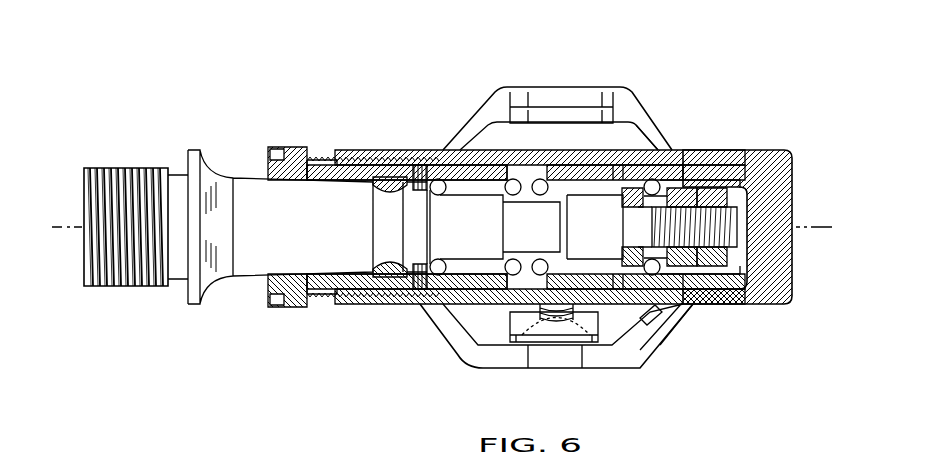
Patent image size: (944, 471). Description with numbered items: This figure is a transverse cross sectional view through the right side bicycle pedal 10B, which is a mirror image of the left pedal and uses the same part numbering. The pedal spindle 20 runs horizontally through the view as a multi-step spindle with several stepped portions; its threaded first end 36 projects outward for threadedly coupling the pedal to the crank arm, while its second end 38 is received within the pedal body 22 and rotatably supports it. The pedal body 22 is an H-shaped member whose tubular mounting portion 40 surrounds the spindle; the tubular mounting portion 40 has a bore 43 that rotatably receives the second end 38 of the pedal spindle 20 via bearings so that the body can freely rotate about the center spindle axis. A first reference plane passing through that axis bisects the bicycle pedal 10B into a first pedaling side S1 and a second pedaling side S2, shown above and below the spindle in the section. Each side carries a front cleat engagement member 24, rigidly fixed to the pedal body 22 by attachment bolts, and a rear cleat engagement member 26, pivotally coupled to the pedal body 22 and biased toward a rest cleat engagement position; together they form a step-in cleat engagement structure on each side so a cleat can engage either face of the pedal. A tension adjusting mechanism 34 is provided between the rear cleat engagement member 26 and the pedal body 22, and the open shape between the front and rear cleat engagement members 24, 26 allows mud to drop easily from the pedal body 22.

The right side bicycle pedal 10B is at (688, 88).
The pedal spindle 20 is at (246, 172).
The pedal body 22 is at (797, 271).
The front cleat engagement member 24 is at (613, 85).
The rear cleat engagement member 26 is at (639, 378).
The tension adjusting mechanism 34 is at (498, 327).
The first end 36 is at (122, 287).
The second end 38 is at (740, 306).
The tubular mounting portion 40 is at (582, 148).
The bore 43 is at (482, 178).
The first pedaling side S1 is at (676, 130).
The second pedaling side S2 is at (703, 321).